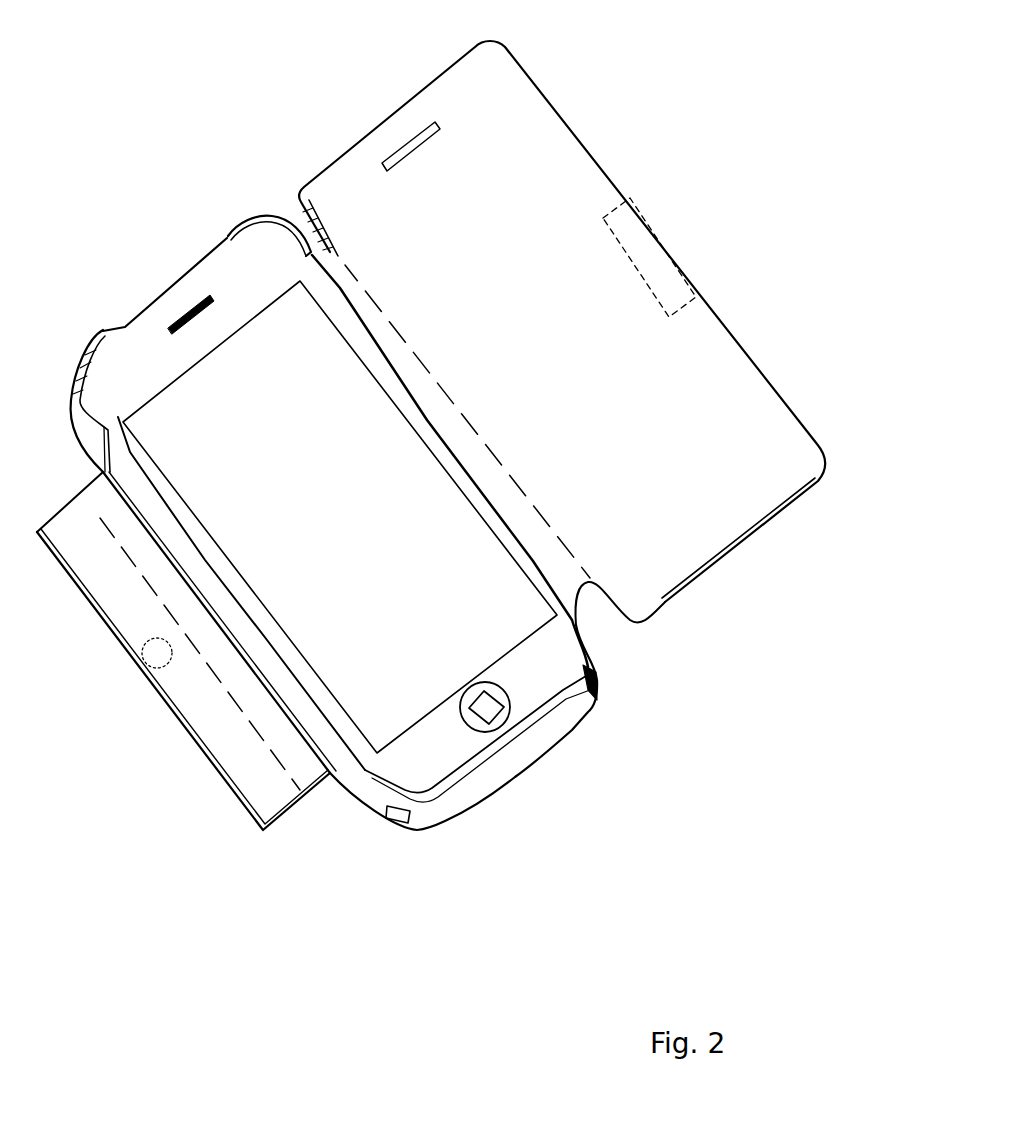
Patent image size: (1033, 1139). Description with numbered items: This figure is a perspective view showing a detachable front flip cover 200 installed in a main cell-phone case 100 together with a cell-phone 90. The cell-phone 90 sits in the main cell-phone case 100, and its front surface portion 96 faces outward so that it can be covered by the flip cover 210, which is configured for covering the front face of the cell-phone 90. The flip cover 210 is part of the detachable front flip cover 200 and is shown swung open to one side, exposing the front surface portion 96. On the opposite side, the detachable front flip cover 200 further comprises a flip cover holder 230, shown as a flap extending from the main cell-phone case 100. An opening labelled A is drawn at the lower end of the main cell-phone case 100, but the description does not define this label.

The detachable front flip cover 200 is at (761, 150).
The flip cover 210 is at (578, 137).
The main cell-phone case 100 is at (423, 823).
The cell-phone 90 is at (226, 261).
The front surface portion 96 is at (180, 417).
The flip cover holder 230 is at (246, 810).
The port opening A is at (397, 820).